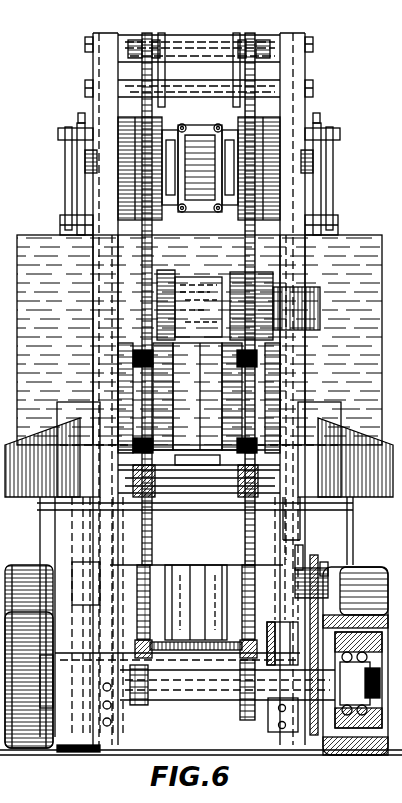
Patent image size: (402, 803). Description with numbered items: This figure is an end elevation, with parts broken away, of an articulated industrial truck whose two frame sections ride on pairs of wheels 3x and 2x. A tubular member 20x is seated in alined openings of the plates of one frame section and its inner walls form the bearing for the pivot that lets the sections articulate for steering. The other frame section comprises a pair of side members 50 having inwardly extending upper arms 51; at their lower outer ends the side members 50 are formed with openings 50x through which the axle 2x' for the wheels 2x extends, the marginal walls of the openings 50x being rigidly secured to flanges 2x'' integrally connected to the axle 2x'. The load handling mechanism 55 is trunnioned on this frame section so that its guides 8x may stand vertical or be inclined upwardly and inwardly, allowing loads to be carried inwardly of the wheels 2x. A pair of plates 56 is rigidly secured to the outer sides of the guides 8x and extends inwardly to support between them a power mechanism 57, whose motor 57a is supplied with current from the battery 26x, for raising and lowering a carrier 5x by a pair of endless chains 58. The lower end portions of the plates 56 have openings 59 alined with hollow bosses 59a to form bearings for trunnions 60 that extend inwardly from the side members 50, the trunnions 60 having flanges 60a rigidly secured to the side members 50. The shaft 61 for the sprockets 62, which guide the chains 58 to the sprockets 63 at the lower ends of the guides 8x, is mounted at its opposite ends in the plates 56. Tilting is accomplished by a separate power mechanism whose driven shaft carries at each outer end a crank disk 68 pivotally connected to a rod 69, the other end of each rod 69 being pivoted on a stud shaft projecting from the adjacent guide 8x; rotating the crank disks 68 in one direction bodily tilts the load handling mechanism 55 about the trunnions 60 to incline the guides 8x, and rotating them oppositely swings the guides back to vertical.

The load handling mechanism 55 is at (200, 192).
The crank disk 68 is at (82, 117).
The rod 69 is at (68, 180).
The battery 26x is at (367, 242).
The guides 8x is at (102, 265).
The motor 57a is at (317, 290).
The plates 56 is at (95, 363).
The power mechanism 57 is at (195, 398).
The endless chains 58 is at (133, 417).
The shaft 61 is at (181, 457).
The sprockets 62 is at (233, 470).
The upper arms 51 is at (348, 443).
The carrier 5x is at (60, 523).
The wheels 3x is at (25, 565).
The tubular member 20x is at (158, 637).
The side members 50 is at (290, 540).
The hollow bosses 59a is at (315, 548).
The flanges 60a is at (320, 568).
The trunnions 60 is at (322, 585).
The wheels 2x is at (355, 661).
The openings 59 is at (282, 641).
The openings 50x is at (287, 643).
The sprockets 63 is at (240, 710).
The axle 2x' is at (279, 726).
The flanges 2x'' is at (309, 655).